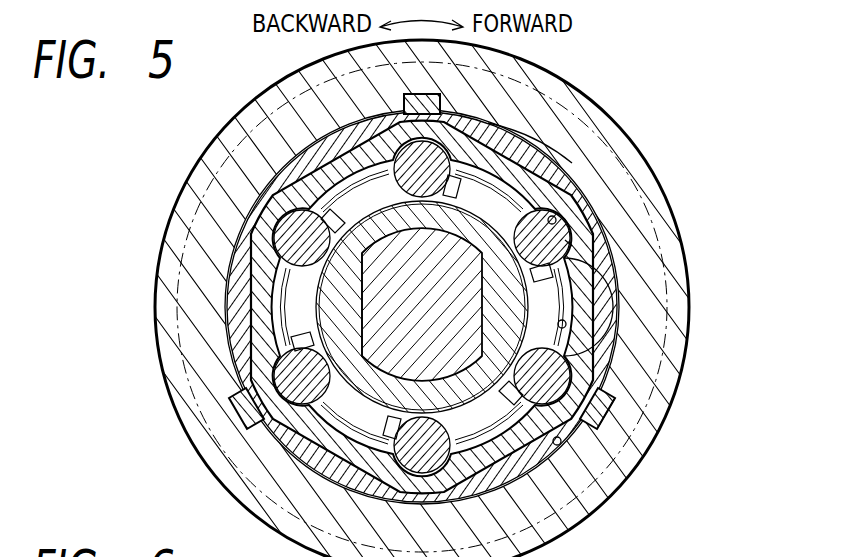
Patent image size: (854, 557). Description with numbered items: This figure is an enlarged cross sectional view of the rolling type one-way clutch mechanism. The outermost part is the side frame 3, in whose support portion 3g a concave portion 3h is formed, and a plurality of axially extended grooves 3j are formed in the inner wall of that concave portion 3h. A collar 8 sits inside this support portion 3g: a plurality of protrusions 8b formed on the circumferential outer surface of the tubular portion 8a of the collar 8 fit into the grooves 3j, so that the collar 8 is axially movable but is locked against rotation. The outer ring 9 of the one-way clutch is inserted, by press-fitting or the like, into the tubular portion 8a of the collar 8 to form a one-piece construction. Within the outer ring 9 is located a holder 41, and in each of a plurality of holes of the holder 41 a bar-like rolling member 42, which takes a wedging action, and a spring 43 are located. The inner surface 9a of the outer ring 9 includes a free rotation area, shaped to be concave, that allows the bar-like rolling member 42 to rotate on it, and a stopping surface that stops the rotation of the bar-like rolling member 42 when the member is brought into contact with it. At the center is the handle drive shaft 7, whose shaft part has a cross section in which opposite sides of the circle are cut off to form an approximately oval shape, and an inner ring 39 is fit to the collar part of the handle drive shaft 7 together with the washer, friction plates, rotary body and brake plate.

The side frame 3 is at (625, 116).
The support portion 3g is at (635, 162).
The concave portion 3h is at (560, 440).
The grooves 3j is at (593, 423).
The handle drive shaft 7 is at (347, 315).
The collar 8 is at (570, 112).
The tubular portion 8a is at (540, 134).
The protrusions 8b is at (600, 413).
The outer ring 9 is at (603, 368).
The inner surface 9a is at (565, 328).
The inner ring 39 is at (353, 309).
The holder 41 is at (560, 302).
The bar-like rolling member 42 is at (557, 233).
The spring 43 is at (563, 267).